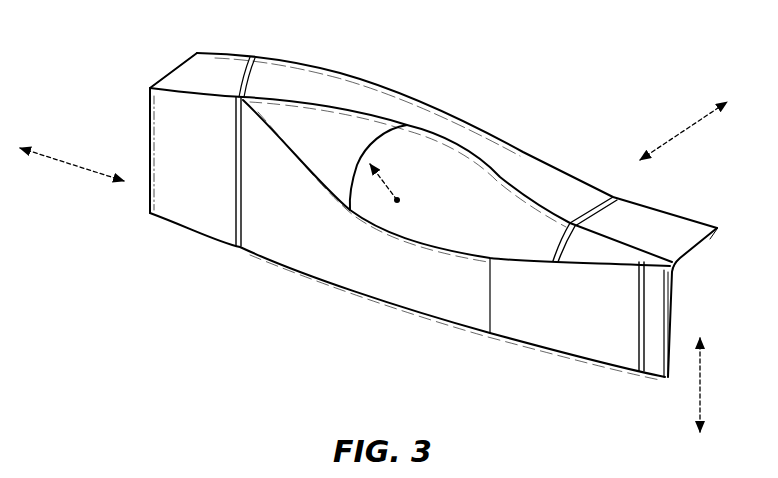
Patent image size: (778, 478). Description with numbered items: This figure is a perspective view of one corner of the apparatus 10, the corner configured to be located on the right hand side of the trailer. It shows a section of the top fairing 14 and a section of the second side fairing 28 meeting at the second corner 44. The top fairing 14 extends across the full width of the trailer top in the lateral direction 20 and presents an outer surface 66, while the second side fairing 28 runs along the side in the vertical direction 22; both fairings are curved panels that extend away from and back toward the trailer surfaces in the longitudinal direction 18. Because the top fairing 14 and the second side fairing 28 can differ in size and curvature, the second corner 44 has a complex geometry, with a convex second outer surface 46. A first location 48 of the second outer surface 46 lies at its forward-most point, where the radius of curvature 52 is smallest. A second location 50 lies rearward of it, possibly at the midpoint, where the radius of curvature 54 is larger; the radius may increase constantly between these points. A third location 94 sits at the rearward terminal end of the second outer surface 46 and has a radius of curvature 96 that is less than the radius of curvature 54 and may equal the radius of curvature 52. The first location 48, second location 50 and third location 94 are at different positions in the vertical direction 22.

The apparatus 10 is at (419, 195).
The top fairing 14 is at (433, 215).
The longitudinal direction 18 is at (73, 167).
The lateral direction 20 is at (683, 130).
The vertical direction 22 is at (700, 380).
The second side fairing 28 is at (435, 293).
The second corner 44 is at (223, 97).
The second outer surface 46 is at (318, 156).
The first location 48 is at (673, 277).
The second location 50 is at (368, 145).
The radius of curvature 52 is at (676, 270).
The radius of curvature 54 is at (388, 188).
The outer surface 66 is at (458, 131).
The third location 94 is at (148, 88).
The radius of curvature 96 is at (178, 123).